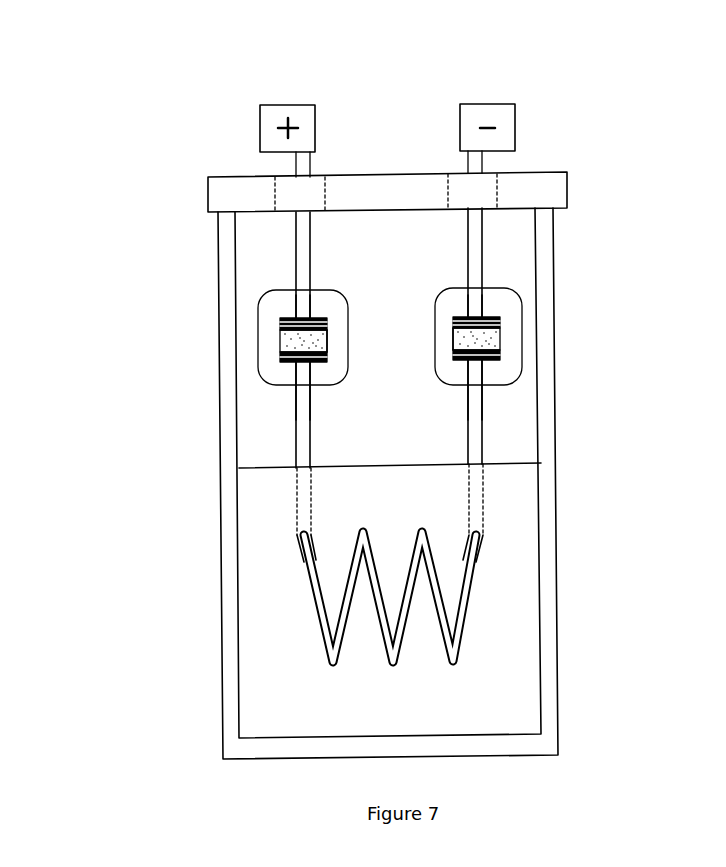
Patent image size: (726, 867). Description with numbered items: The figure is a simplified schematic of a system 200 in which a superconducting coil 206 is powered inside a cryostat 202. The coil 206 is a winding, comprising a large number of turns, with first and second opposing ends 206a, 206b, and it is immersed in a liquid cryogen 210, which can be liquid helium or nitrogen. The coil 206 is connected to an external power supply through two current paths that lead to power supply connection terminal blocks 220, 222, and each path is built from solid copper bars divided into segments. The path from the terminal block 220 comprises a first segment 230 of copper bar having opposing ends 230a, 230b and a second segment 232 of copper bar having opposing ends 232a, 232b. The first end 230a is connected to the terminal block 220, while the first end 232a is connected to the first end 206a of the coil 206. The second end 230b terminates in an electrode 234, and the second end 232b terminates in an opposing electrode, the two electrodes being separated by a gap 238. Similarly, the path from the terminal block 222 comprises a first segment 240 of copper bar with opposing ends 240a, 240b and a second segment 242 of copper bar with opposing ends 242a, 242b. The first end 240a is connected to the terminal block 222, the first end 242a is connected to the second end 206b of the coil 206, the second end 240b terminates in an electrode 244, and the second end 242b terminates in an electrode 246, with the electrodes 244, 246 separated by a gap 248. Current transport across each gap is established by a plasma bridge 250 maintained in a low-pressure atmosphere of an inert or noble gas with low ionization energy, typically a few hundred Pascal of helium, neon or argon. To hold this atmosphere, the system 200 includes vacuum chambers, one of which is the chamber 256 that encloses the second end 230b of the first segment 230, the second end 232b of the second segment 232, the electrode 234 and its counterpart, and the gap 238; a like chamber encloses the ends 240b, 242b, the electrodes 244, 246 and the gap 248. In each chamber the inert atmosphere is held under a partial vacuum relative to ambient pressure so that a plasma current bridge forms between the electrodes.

The system 200 is at (68, 69).
The cryostat 202 is at (218, 393).
The superconducting coil 206 is at (470, 612).
The first end of the coil 206a is at (297, 545).
The second end of the coil 206b is at (485, 537).
The liquid cryogen 210 is at (520, 493).
The power supply connection terminal block 220 is at (282, 102).
The power supply connection terminal block 222 is at (498, 103).
The first segment of copper bar 230 is at (293, 237).
The first end of the first segment of copper bar 230a is at (310, 156).
The second end of the first segment of copper bar 230b is at (305, 312).
The second segment of copper bar 232 is at (290, 440).
The first end of the second segment of copper bar 232a is at (318, 537).
The second end of the second segment of copper bar 232b is at (293, 367).
The electrode 234 is at (282, 327).
The gap 238 is at (282, 342).
The first segment of copper bar 240 is at (468, 270).
The first end of the first segment of copper bar 240a is at (483, 157).
The second end of the first segment of copper bar 240b is at (487, 302).
The second segment of copper bar 242 is at (485, 441).
The first end of the second segment of copper bar 242a is at (465, 523).
The second end of the second segment of copper bar 242b is at (490, 368).
The electrode 244 is at (500, 320).
The electrode 246 is at (282, 357).
The gap 248 is at (500, 338).
The plasma bridge 250 is at (327, 338).
The vacuum chamber 256 is at (258, 312).